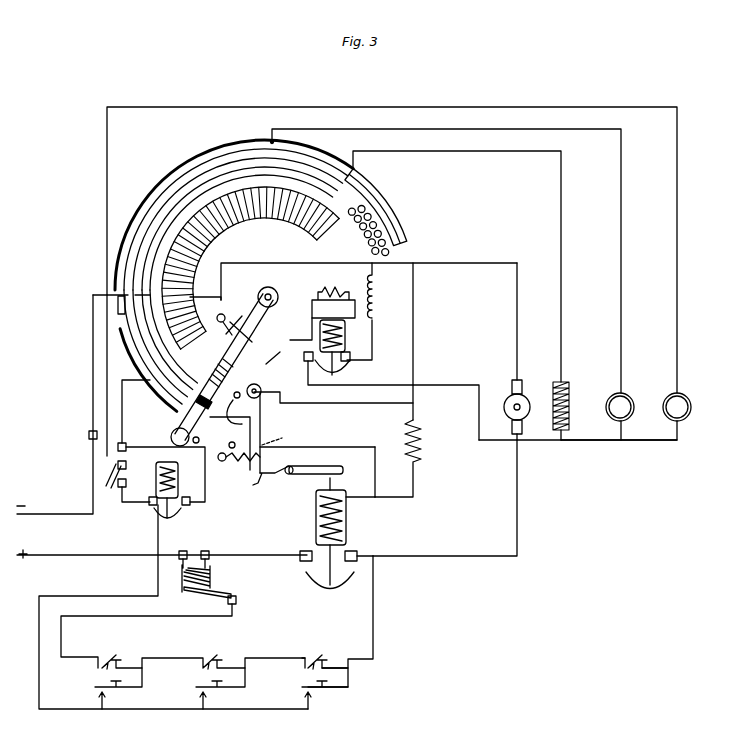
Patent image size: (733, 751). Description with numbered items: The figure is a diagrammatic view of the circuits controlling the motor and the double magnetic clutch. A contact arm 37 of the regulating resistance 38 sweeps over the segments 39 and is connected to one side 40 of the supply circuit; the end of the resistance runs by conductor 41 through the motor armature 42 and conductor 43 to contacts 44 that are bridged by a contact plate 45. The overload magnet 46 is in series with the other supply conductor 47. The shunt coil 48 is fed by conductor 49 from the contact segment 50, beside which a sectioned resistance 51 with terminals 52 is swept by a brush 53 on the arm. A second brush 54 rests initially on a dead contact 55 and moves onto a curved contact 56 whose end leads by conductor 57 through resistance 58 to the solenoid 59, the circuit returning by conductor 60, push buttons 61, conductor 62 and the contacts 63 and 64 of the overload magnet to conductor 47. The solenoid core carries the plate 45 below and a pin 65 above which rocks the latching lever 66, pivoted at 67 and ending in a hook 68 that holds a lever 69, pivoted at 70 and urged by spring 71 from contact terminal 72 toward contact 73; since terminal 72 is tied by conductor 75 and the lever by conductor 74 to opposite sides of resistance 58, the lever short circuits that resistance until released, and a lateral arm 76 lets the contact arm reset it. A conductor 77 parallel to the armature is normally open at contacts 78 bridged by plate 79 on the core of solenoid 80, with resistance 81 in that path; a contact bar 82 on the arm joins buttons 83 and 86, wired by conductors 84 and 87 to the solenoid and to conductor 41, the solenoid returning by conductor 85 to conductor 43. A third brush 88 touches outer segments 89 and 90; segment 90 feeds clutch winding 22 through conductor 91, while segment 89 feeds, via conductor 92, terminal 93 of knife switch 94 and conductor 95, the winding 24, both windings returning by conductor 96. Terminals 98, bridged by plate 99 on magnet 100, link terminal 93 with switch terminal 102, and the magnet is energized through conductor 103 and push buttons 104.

The winding 22 is at (626, 396).
The winding 24 is at (683, 400).
The contact arm 37 is at (262, 322).
The regulating resistance 38 is at (255, 210).
The segments 39 is at (285, 205).
The side of the supply circuit 40 is at (60, 514).
The conductor 41 is at (457, 262).
The armature 42 is at (524, 392).
The conductor 43 is at (517, 506).
The contacts 44 is at (299, 558).
The contact plate 45 is at (326, 582).
The overload magnet 46 is at (213, 578).
The supply conductor 47 is at (51, 555).
The shunt coil 48 is at (571, 392).
The conductor 49 is at (561, 230).
The contact segment 50 is at (240, 180).
The resistance 51 is at (385, 210).
The terminals 52 is at (395, 236).
The brush 53 is at (243, 390).
The second brush 54 is at (230, 443).
The dead contact 55 is at (172, 432).
The curved contact 56 is at (212, 165).
The conductor 57 is at (413, 304).
The resistance 58 is at (420, 448).
The solenoid 59 is at (348, 515).
The conductor 60 is at (373, 598).
The push buttons 61 is at (108, 662).
The conductor 62 is at (186, 616).
The contact 63 is at (236, 602).
The contact 64 is at (232, 596).
The pin 65 is at (342, 481).
The latching lever 66 is at (317, 460).
The pivot 67 is at (289, 476).
The hook 68 is at (258, 478).
The lever 69 is at (261, 430).
The pivot 70 is at (262, 390).
The spring 71 is at (222, 462).
The contact terminal 72 is at (284, 438).
The contact 73 is at (222, 449).
The conductor 74 is at (336, 404).
The conductor 75 is at (361, 447).
The lateral arm 76 is at (232, 409).
The conductor 77 is at (375, 278).
The contacts 78 is at (350, 362).
The contact plate 79 is at (332, 372).
The solenoid magnet 80 is at (338, 331).
The resistance 81 is at (374, 318).
The contact bar 82 is at (234, 314).
The contact button 83 is at (216, 381).
The conductor 84 is at (280, 354).
The conductor 85 is at (459, 385).
The contact button 86 is at (219, 323).
The conductor 87 is at (303, 263).
The third contact brush 88 is at (198, 446).
The segment 89 is at (120, 337).
The segment 90 is at (173, 178).
The conductor 91 is at (621, 214).
The conductor 92 is at (122, 402).
The terminal 93 is at (89, 434).
The single pole overthrow knife switch 94 is at (108, 473).
The conductor 95 is at (107, 148).
The conductor 96 is at (646, 442).
The terminals 98 is at (158, 505).
The contact plate 99 is at (183, 520).
The magnet 100 is at (158, 492).
The terminal 102 is at (124, 470).
The conductor 103 is at (158, 532).
The push buttons 104 is at (120, 690).